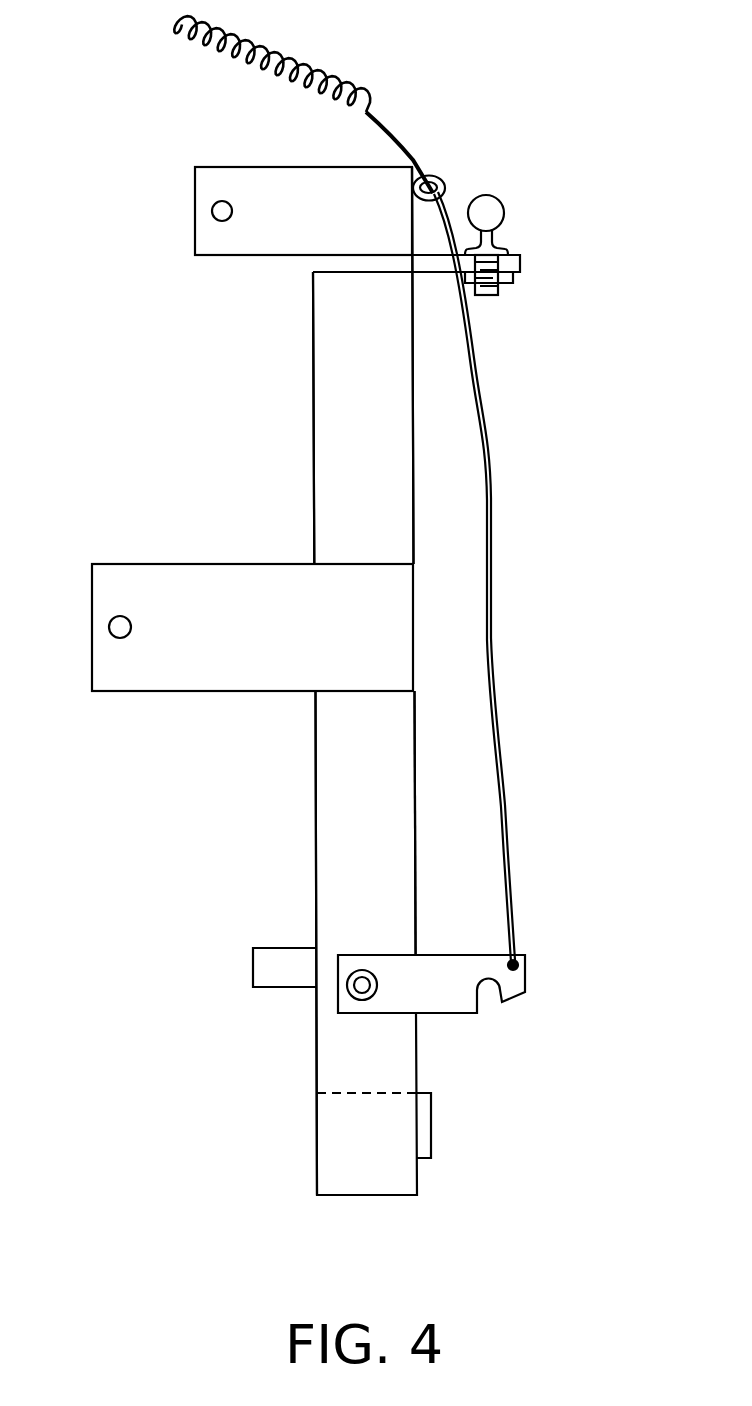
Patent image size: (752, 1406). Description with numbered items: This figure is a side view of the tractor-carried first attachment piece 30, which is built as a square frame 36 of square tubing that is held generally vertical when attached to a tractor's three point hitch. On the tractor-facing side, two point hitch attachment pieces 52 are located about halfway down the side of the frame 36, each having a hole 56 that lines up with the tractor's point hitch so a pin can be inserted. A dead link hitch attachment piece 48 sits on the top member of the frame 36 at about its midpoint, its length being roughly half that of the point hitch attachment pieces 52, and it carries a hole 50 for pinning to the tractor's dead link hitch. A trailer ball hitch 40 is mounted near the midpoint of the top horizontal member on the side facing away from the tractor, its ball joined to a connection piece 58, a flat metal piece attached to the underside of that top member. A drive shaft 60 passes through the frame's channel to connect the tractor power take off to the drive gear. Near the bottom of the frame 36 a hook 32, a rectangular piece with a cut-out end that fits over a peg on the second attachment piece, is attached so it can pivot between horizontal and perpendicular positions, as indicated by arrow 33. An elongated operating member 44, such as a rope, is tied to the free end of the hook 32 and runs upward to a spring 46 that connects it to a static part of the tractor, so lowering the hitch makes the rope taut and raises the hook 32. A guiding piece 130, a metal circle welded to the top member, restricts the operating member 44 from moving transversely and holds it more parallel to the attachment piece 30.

The first attachment piece 30 is at (369, 1206).
The hook 32 is at (478, 1021).
The arrow 33 is at (488, 953).
The square frame 36 is at (301, 826).
The trailer ball hitch 40 is at (509, 215).
The elongated operating member 44 is at (496, 489).
The spring 46 is at (216, 63).
The dead link hitch attachment piece 48 is at (243, 259).
The hole 50 is at (212, 212).
The point hitch attachment piece 52 is at (163, 695).
The hole 56 is at (108, 632).
The connection piece 58 is at (507, 288).
The drive shaft 60 is at (274, 991).
The guiding piece 130 is at (432, 175).